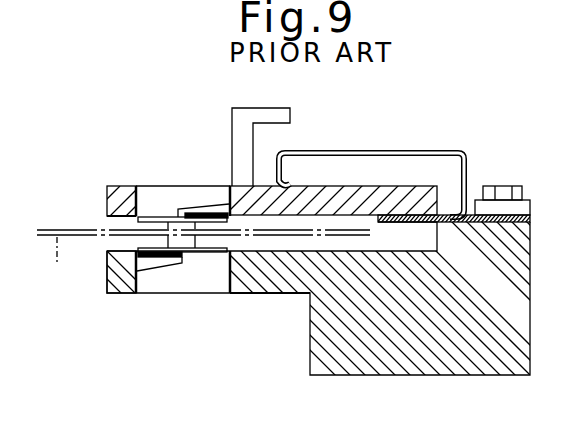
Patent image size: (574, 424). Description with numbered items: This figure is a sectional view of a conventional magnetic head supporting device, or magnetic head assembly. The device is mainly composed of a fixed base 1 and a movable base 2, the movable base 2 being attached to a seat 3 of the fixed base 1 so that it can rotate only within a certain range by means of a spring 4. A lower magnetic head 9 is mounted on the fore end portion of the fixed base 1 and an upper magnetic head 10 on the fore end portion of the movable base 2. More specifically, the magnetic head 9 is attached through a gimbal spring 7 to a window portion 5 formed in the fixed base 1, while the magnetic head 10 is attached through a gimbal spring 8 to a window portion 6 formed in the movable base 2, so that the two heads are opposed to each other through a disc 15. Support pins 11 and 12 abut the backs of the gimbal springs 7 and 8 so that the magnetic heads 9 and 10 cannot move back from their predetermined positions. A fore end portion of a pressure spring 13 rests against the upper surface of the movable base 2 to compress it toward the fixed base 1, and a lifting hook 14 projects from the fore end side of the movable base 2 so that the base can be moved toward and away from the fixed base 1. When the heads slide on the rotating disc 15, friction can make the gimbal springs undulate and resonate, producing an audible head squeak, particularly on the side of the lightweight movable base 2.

The fixed base 1 is at (292, 294).
The movable base 2 is at (317, 186).
The seat 3 is at (437, 239).
The spring 4 is at (398, 222).
The window portion 5 is at (223, 283).
The window portion 6 is at (143, 197).
The gimbal spring 7 is at (210, 254).
The gimbal spring 8 is at (157, 213).
The magnetic head 9 is at (110, 247).
The magnetic head 10 is at (109, 224).
The support pin 11 is at (163, 273).
The support pin 12 is at (211, 201).
The pressure spring 13 is at (366, 152).
The lifting hook 14 is at (291, 121).
The disc 15 is at (55, 262).